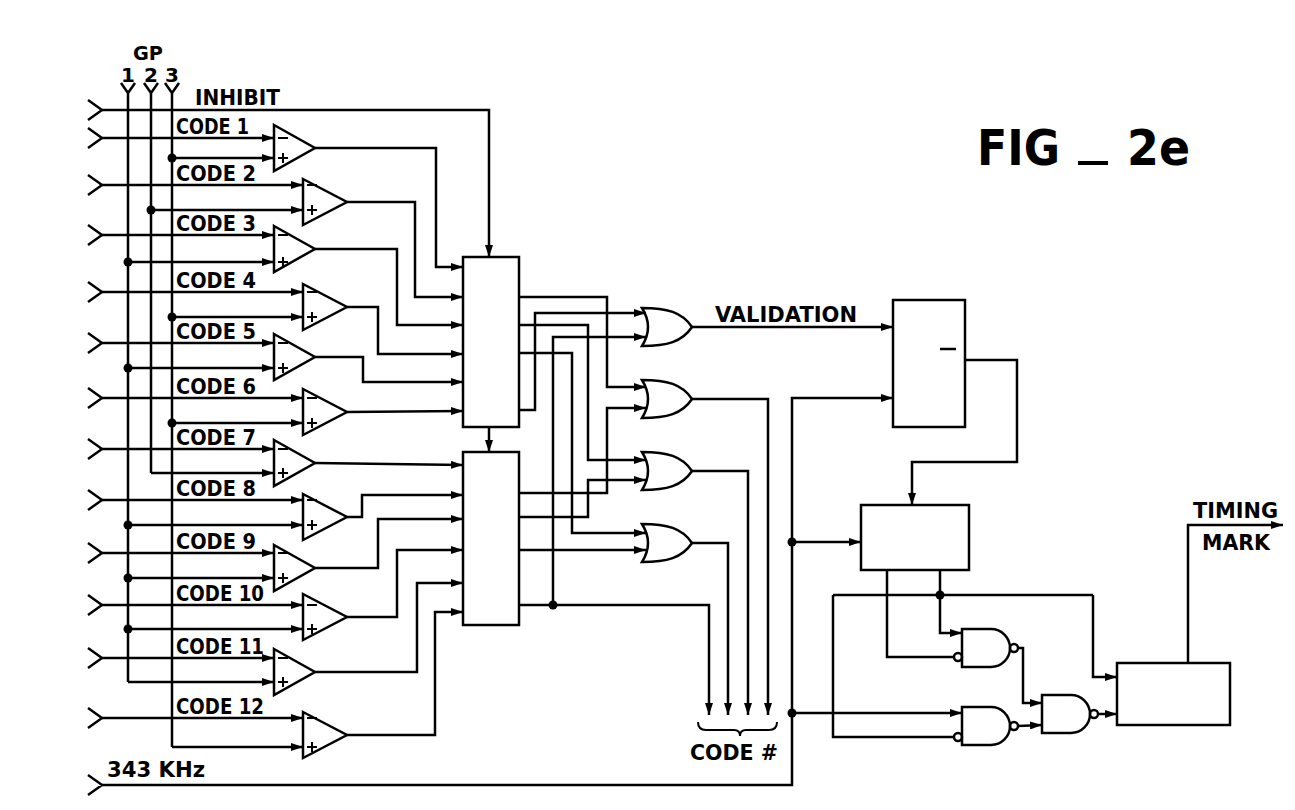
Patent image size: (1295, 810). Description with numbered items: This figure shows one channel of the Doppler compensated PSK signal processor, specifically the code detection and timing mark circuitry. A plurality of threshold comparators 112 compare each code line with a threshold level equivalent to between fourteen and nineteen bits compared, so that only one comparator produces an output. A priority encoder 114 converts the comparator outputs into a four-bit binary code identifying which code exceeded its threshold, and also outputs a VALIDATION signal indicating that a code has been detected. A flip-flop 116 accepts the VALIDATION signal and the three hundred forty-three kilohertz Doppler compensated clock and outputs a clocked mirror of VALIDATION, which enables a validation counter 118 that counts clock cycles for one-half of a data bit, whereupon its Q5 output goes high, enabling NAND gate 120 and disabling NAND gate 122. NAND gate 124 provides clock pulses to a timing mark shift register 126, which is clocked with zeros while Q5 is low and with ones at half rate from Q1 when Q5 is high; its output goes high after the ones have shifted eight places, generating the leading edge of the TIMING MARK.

The threshold comparators 112 is at (270, 125).
The priority encoder 114 is at (517, 257).
The flip-flop 116 is at (967, 310).
The validation counter 118 is at (972, 528).
The NAND gate 120 is at (997, 632).
The NAND gate 122 is at (987, 747).
The NAND gate 124 is at (1068, 733).
The timing mark shift register 126 is at (1177, 727).